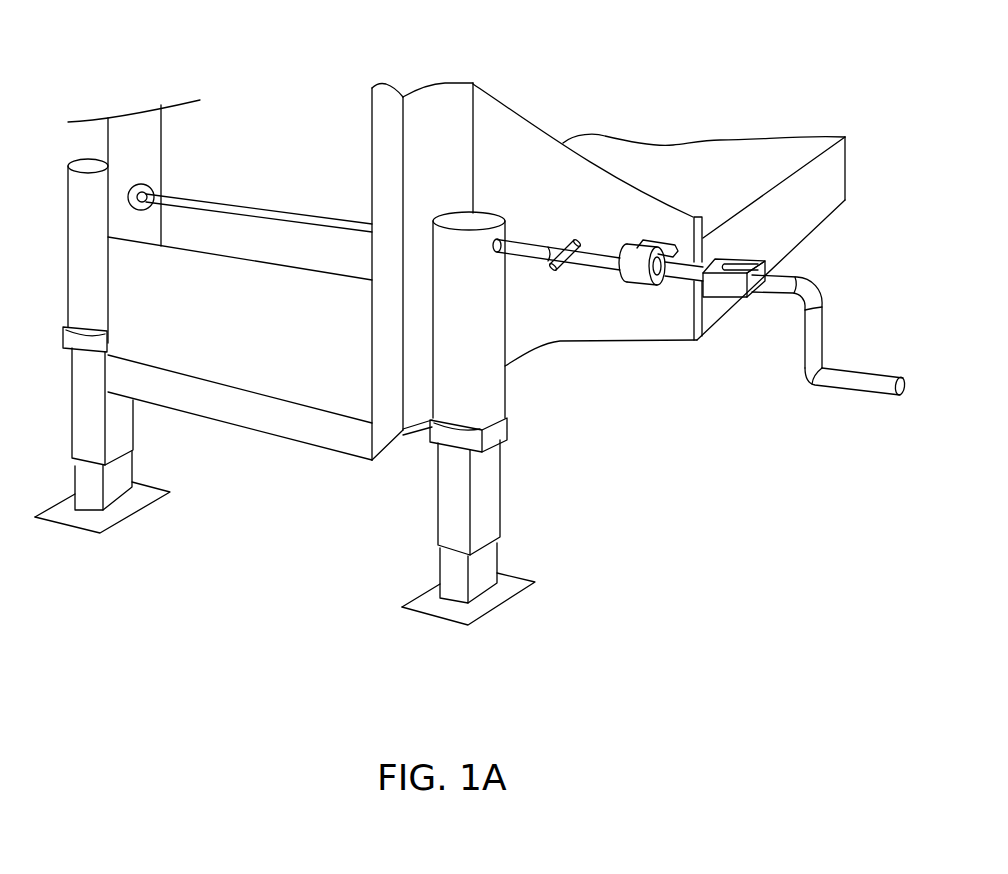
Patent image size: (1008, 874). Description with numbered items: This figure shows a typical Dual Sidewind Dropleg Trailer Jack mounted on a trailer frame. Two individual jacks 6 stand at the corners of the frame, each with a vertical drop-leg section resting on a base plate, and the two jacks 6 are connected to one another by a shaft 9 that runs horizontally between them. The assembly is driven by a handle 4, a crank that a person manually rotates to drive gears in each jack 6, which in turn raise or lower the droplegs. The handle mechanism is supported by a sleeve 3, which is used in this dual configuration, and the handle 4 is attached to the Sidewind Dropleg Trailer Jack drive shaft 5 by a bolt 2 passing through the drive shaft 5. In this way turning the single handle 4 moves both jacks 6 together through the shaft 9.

The bolt 2 is at (555, 272).
The sleeve 3 is at (637, 285).
The handle 4 is at (856, 390).
The drive shaft 5 is at (528, 244).
The jack 6 is at (72, 410).
The shaft 9 is at (247, 205).